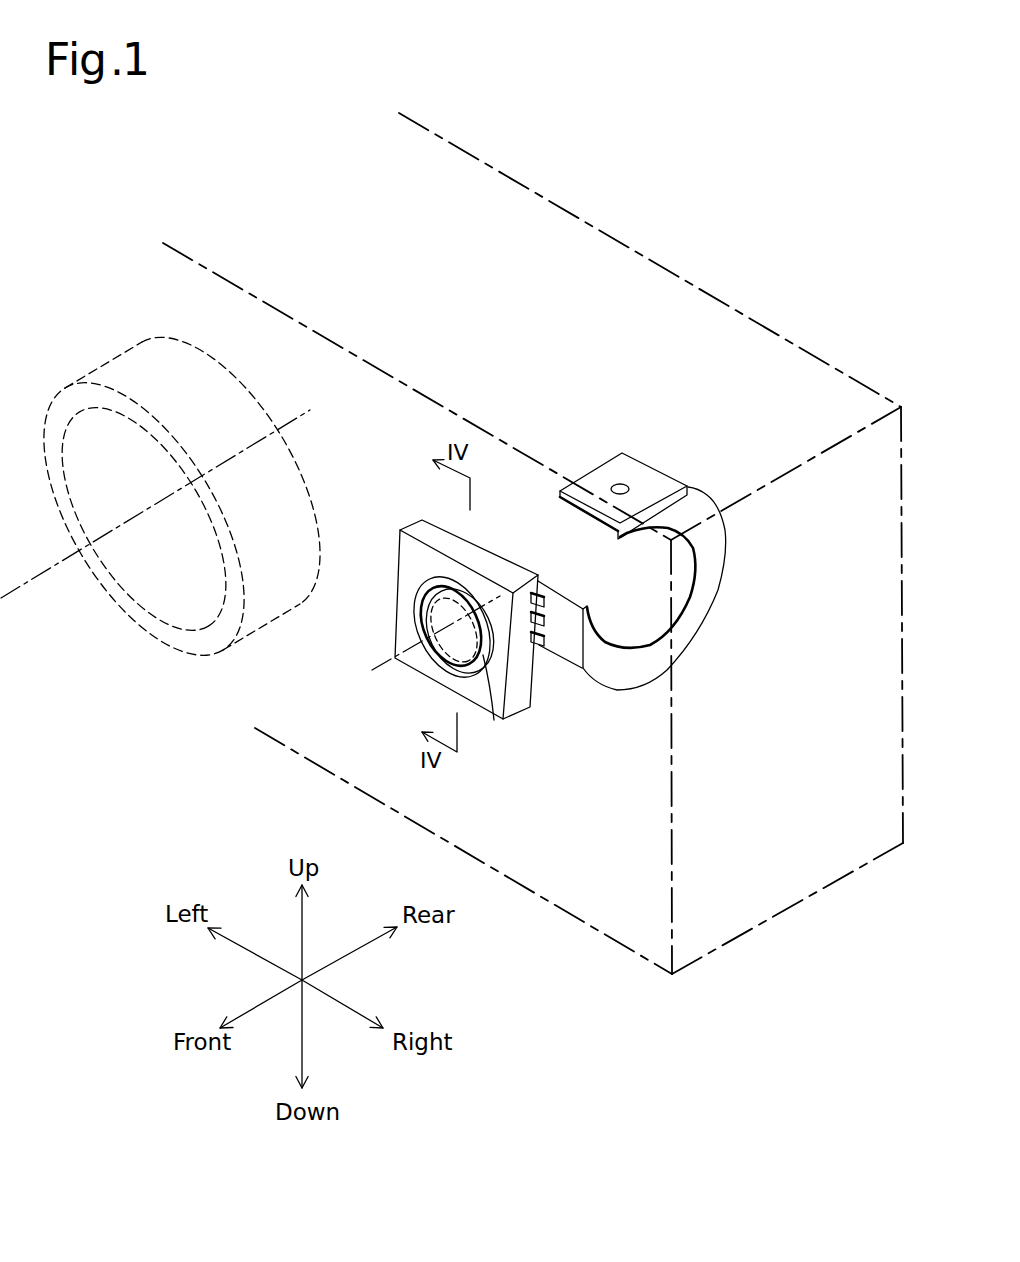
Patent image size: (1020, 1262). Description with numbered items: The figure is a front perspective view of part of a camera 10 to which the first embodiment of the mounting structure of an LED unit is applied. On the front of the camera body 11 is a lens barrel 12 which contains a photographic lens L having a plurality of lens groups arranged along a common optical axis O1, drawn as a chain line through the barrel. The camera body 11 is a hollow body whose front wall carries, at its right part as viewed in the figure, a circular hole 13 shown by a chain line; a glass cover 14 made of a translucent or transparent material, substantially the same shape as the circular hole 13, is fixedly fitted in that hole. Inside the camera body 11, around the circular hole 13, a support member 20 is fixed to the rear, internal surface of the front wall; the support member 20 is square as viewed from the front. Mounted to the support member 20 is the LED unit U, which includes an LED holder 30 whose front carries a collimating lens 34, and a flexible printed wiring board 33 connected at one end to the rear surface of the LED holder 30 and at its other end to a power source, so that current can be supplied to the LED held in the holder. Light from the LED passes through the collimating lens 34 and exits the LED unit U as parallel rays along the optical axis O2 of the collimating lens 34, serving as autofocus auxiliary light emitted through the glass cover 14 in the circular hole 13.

The camera 10 is at (535, 160).
The camera body 11 is at (640, 277).
The lens barrel 12 is at (167, 643).
The circular hole 13 is at (437, 660).
The glass cover 14 is at (444, 670).
The support member 20 is at (517, 700).
The LED holder 30 is at (503, 557).
The flexible printed wiring board 33 is at (705, 592).
The collimating lens 34 is at (494, 720).
The optical axis O1 is at (30, 587).
The optical axis O2 is at (373, 653).
The photographic lens L is at (121, 616).
The LED unit U is at (568, 680).